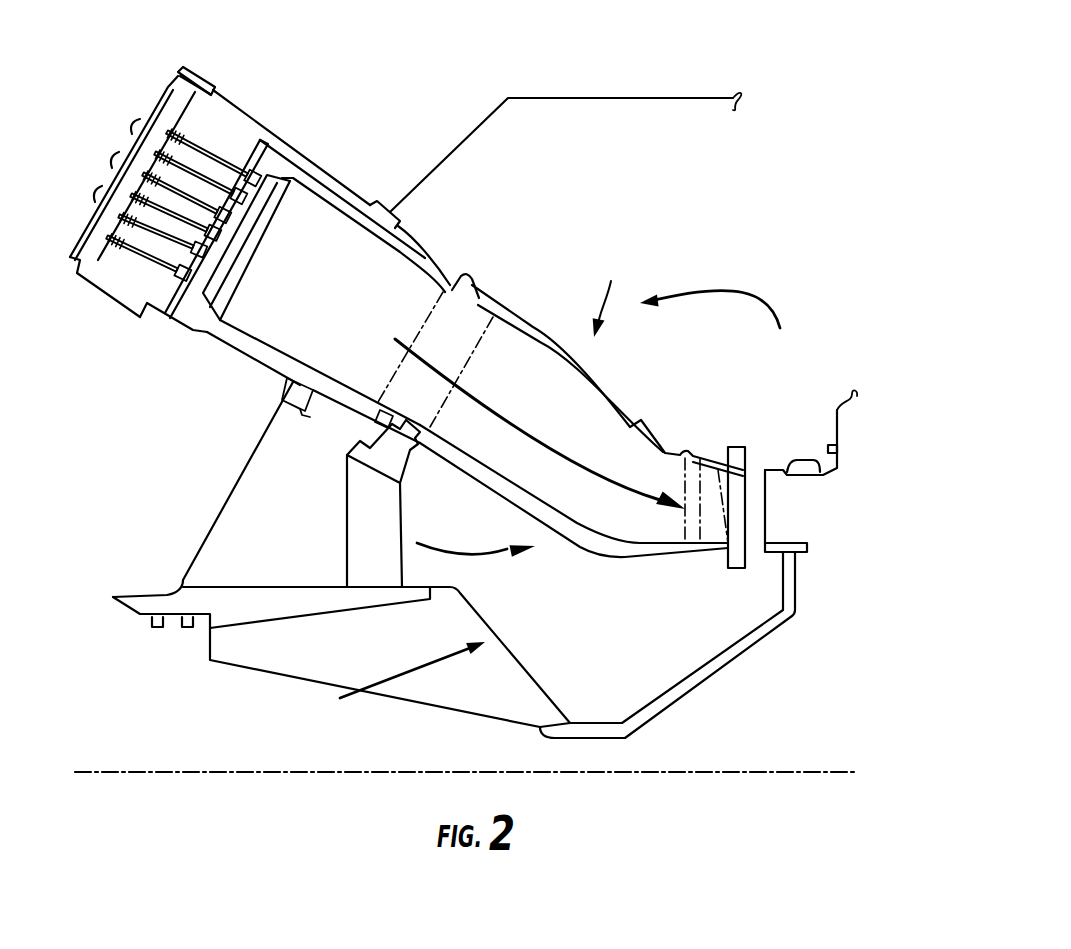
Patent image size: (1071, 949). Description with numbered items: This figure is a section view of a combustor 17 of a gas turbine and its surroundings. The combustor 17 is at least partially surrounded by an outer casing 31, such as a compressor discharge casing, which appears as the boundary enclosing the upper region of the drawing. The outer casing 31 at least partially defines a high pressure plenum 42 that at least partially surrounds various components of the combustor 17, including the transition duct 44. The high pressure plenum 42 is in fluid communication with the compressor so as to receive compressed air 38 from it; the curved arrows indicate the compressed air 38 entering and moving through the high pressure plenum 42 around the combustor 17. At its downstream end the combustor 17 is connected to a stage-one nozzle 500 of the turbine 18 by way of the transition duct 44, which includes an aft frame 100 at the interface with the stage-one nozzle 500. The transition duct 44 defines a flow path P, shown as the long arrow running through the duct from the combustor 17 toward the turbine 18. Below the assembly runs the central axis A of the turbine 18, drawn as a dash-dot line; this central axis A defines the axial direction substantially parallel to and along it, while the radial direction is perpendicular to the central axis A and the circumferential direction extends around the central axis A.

The combustor 17 is at (243, 374).
The turbine 18 is at (806, 525).
The outer casing 31 is at (618, 98).
The compressed air 38 is at (740, 287).
The high pressure plenum 42 is at (674, 189).
The transition duct 44 is at (607, 293).
The aft frame 100 is at (737, 575).
The stage-one nozzle 500 is at (776, 468).
The flow path P is at (505, 420).
The central axis A is at (385, 774).